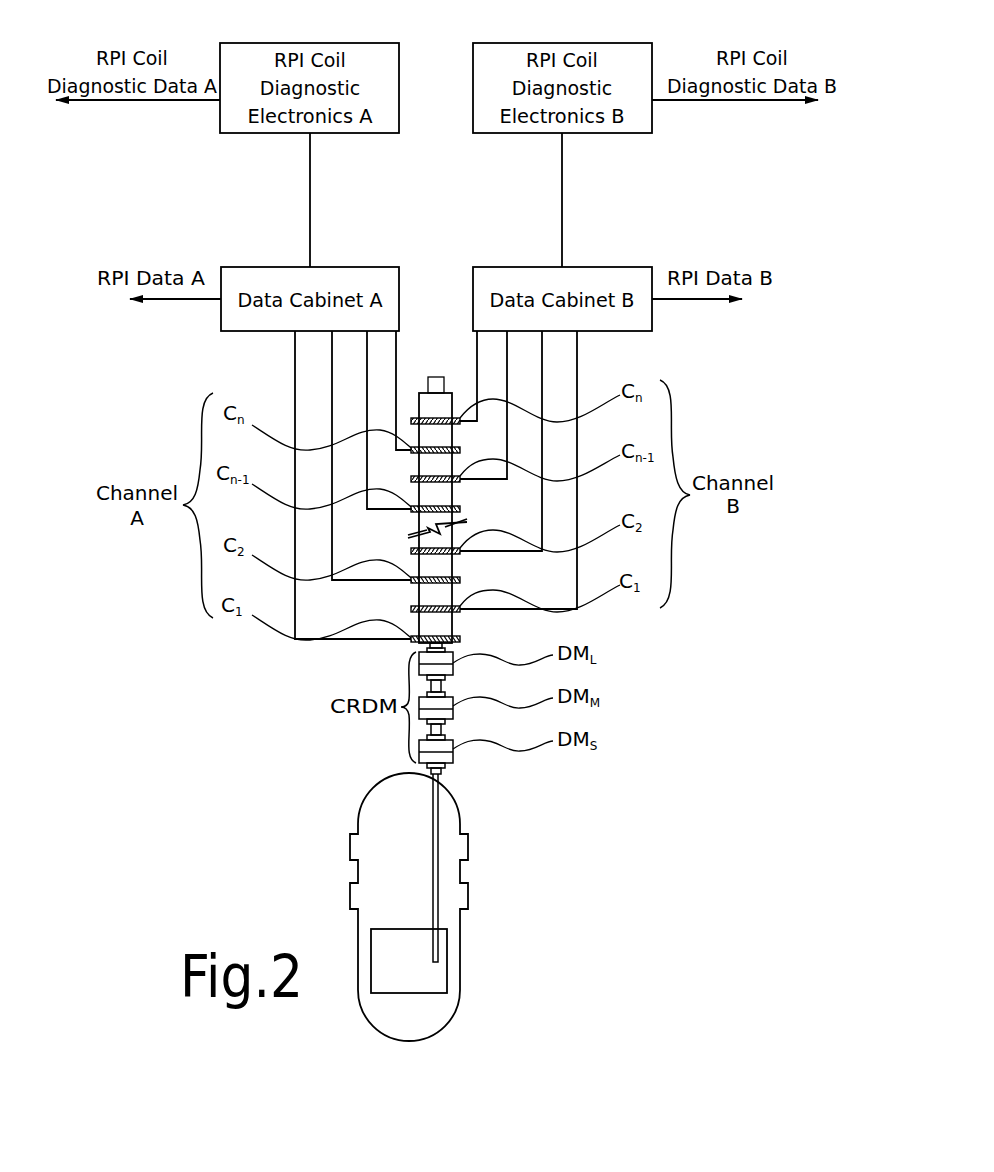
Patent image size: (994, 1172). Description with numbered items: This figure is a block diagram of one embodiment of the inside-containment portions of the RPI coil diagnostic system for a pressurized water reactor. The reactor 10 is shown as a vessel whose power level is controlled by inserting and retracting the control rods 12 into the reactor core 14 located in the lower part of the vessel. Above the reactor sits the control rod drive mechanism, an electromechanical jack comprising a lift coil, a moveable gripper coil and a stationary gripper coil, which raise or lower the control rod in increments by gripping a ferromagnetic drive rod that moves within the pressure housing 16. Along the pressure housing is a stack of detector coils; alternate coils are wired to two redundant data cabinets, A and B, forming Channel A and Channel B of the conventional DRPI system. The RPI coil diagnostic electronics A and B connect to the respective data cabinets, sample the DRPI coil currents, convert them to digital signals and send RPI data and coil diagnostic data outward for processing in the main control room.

The reactor 10 is at (460, 818).
The control rods 12 is at (438, 895).
The reactor core 14 is at (438, 983).
The pressure housing 16 is at (436, 377).